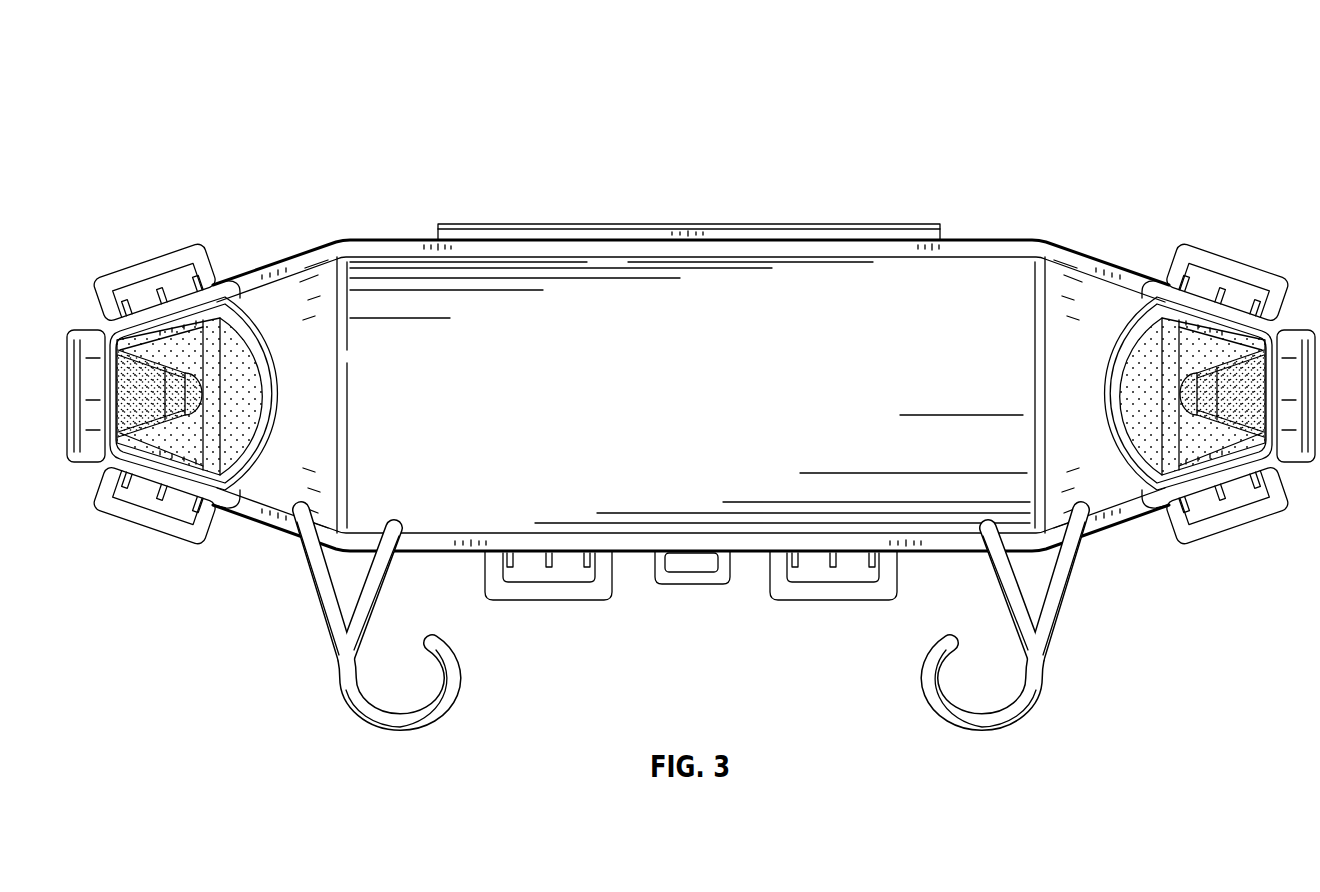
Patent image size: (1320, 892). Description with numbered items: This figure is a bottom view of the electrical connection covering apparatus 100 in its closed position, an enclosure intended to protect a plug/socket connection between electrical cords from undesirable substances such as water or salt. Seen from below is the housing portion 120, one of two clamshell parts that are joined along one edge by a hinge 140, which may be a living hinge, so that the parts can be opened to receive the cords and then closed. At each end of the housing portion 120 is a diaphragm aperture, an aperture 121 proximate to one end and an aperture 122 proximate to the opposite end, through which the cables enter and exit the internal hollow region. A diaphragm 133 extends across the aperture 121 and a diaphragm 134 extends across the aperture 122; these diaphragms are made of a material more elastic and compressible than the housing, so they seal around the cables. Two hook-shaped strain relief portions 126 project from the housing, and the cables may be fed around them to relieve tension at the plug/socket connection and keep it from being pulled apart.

The apparatus 100 is at (151, 105).
The housing portion 120 is at (666, 390).
The aperture 121 is at (1123, 340).
The aperture 122 is at (260, 350).
The strain relief portion 126 is at (404, 716).
The diaphragm 133 is at (1142, 363).
The diaphragm 134 is at (232, 340).
The hinge 140 is at (658, 225).